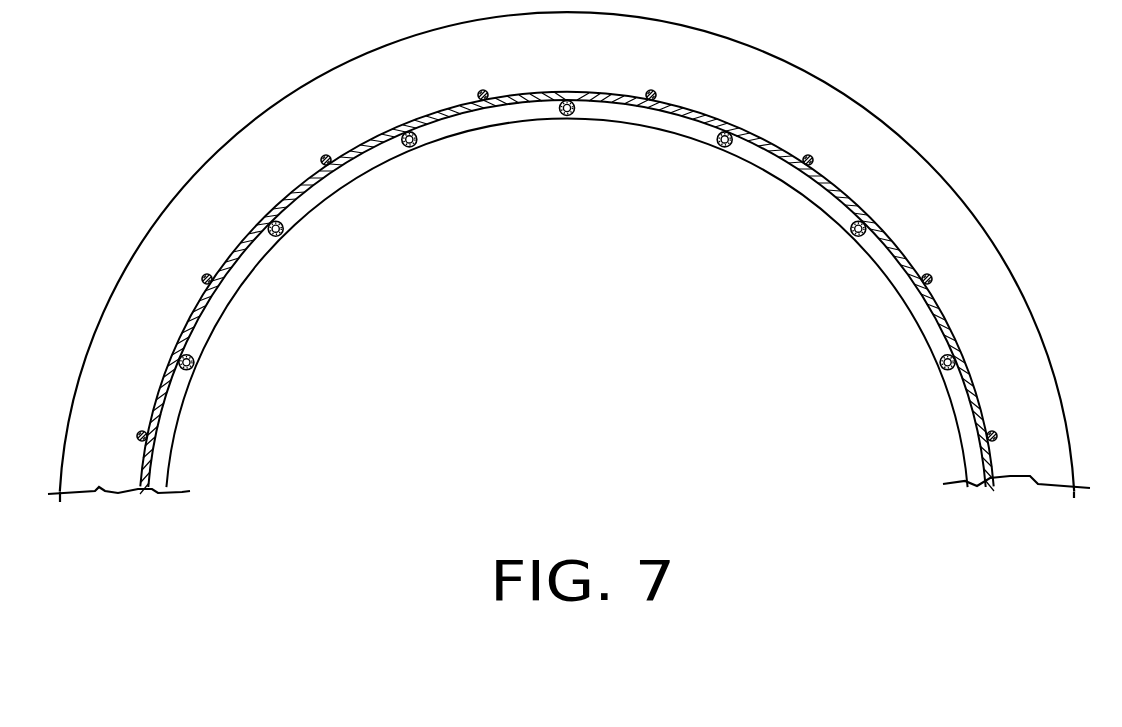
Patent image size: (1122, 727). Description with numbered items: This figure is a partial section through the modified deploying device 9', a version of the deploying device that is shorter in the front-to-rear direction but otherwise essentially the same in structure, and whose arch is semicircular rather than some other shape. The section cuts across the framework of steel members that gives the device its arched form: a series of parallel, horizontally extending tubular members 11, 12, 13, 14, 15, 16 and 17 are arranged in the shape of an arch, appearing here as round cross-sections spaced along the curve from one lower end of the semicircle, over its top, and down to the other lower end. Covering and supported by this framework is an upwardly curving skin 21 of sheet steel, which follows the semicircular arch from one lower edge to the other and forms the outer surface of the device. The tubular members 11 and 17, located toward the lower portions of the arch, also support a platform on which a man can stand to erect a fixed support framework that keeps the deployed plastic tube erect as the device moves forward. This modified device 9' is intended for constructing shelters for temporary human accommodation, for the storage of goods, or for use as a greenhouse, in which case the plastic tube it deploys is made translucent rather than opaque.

The modified deploying device 9' is at (569, 257).
The skin 21 is at (843, 190).
The tubular member 11 is at (942, 373).
The tubular member 12 is at (830, 269).
The tubular member 13 is at (721, 150).
The tubular member 14 is at (570, 116).
The tubular member 15 is at (412, 148).
The tubular member 16 is at (281, 236).
The tubular member 17 is at (194, 364).